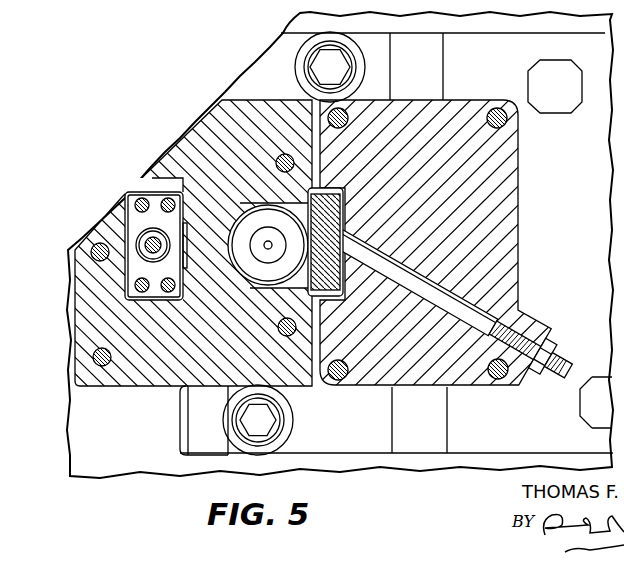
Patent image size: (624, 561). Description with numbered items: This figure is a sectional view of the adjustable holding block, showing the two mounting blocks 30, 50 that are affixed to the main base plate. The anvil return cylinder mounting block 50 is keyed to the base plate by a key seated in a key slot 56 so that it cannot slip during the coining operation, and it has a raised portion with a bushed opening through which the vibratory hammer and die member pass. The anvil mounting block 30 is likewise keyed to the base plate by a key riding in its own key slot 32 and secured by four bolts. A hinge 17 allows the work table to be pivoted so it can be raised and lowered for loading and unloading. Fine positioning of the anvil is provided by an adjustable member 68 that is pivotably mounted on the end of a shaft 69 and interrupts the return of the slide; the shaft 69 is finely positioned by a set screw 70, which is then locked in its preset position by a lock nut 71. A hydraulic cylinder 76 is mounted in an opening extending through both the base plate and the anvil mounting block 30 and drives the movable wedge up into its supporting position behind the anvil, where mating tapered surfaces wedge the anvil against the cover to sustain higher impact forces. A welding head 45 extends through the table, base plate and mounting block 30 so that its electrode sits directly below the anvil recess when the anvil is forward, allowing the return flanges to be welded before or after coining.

The hinge 17 is at (323, 72).
The anvil mounting block 30 is at (220, 121).
The key slot 32 is at (197, 428).
The welding head 45 is at (265, 243).
The anvil return cylinder mounting block 50 is at (507, 250).
The key slot 56 is at (402, 432).
The adjustable member 68 is at (328, 222).
The shaft 69 is at (430, 288).
The set screw 70 is at (573, 363).
The lock nut 71 is at (551, 339).
The hydraulic cylinder 76 is at (152, 243).